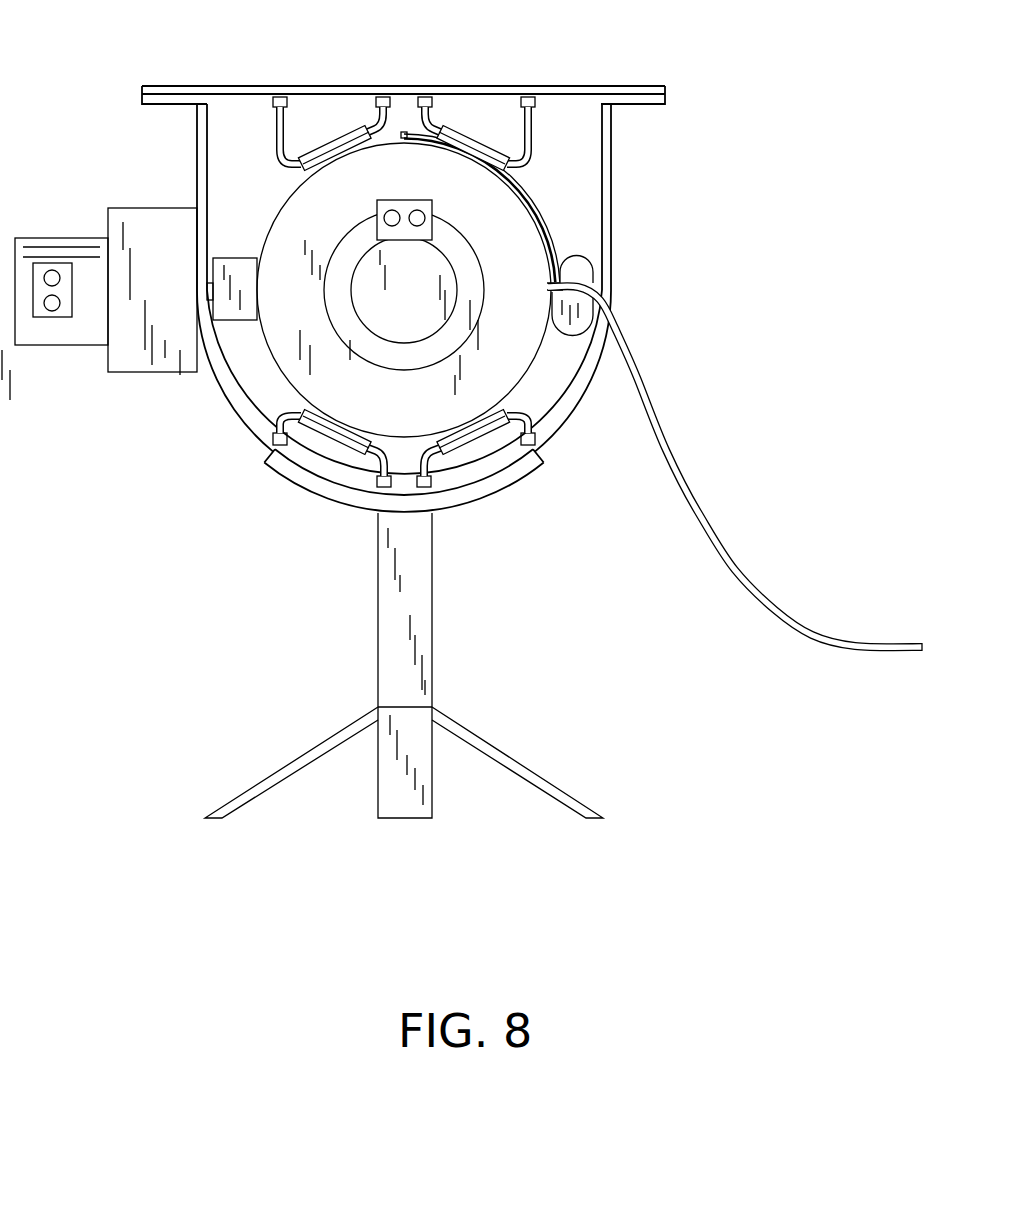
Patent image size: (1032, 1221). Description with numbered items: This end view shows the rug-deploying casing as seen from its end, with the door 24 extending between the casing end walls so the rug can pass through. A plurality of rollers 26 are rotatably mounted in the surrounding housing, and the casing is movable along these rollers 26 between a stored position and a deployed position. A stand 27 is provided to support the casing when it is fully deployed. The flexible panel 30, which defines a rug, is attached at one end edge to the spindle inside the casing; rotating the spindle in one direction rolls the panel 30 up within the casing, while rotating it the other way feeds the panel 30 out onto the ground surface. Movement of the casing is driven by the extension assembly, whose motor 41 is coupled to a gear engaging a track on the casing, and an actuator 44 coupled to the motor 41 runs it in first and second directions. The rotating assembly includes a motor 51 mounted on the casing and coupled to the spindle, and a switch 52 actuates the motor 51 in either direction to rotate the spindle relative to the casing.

The door 24 is at (553, 228).
The rollers 26 is at (477, 137).
The stand 27 is at (378, 621).
The flexible panel 30 is at (798, 622).
The motor 41 is at (43, 346).
The actuator 44 is at (40, 272).
The motor 51 is at (404, 289).
The switch 52 is at (378, 202).